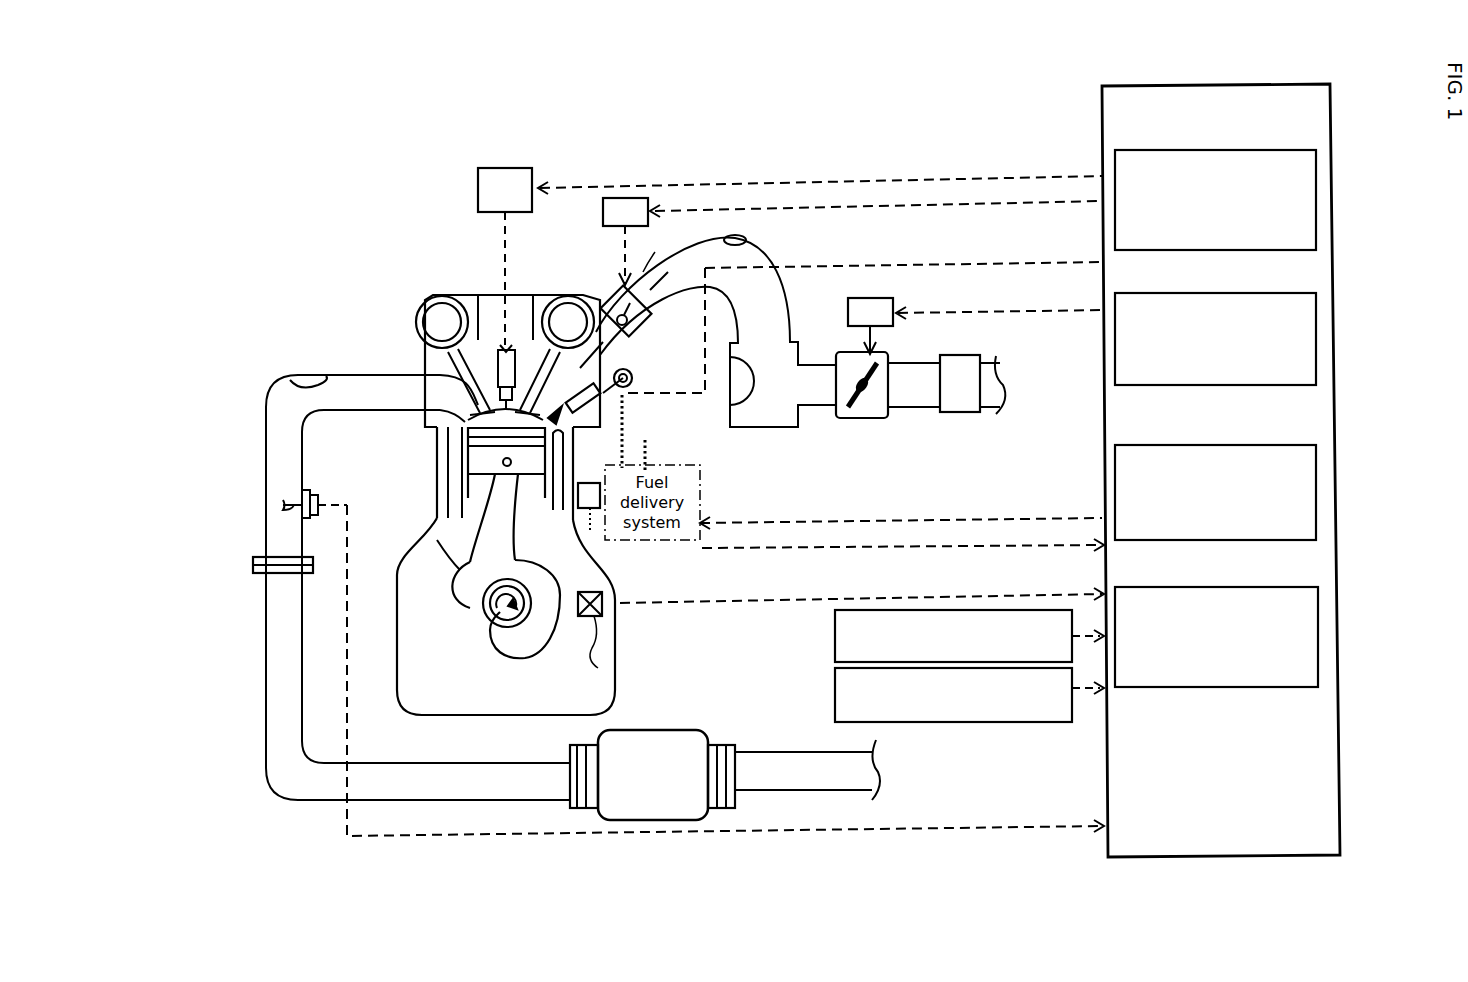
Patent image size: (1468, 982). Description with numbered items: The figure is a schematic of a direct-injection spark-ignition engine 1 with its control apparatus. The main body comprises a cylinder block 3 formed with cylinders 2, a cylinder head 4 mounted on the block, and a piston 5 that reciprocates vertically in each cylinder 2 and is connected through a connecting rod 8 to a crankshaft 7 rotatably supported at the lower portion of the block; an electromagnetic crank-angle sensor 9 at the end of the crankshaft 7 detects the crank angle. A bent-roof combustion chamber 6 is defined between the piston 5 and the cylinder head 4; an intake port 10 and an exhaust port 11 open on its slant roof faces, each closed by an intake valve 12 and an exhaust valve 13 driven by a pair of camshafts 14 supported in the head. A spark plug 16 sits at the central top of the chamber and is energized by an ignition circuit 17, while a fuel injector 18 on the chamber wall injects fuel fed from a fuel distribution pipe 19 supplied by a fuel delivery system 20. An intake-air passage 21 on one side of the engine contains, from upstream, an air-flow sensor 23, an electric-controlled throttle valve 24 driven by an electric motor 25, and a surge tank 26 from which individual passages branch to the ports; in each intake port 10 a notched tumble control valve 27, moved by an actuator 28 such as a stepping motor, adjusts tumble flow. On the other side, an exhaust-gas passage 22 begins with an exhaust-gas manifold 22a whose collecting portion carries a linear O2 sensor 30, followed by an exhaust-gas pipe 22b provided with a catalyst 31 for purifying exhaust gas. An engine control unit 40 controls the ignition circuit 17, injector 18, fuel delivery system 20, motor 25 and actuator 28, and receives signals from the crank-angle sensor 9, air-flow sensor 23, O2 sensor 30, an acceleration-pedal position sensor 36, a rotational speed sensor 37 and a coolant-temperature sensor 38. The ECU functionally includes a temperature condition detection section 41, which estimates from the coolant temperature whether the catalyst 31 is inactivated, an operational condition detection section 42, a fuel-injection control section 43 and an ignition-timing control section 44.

The engine 1 is at (392, 600).
The cylinder 2 is at (506, 525).
The cylinder block 3 is at (437, 522).
The cylinder head 4 is at (468, 432).
The piston 5 is at (462, 490).
The combustion chamber 6 is at (468, 462).
The crankshaft 7 is at (470, 610).
The connecting rod 8 is at (437, 556).
The crank-angle sensor 9 is at (595, 655).
The intake port 10 is at (637, 353).
The exhaust port 11 is at (430, 396).
The intake valve 12 is at (624, 299).
The exhaust valve 13 is at (425, 368).
The camshaft 14 is at (416, 322).
The spark plug 16 is at (480, 295).
The ignition circuit 17 is at (478, 188).
The fuel injector 18 is at (596, 408).
The fuel distribution pipe 19 is at (633, 380).
The fuel delivery system 20 is at (646, 432).
The intake-air passage 21 is at (746, 242).
The exhaust-gas passage 22 is at (300, 381).
The exhaust-gas manifold 22a is at (265, 445).
The exhaust-gas pipe 22b is at (372, 763).
The air-flow sensor 23 is at (965, 355).
The throttle valve 24 is at (862, 418).
The electric motor 25 is at (890, 298).
The surge tank 26 is at (728, 418).
The tumble control valve 27 is at (670, 245).
The actuator 28 is at (603, 212).
The linear O2 sensor 30 is at (308, 490).
The catalyst 31 is at (665, 730).
The acceleration-pedal position sensor 36 is at (975, 610).
The rotational speed sensor 37 is at (985, 722).
The coolant-temperature sensor 38 is at (604, 594).
The engine control unit 40 is at (1340, 118).
The temperature condition detection section 41 is at (1316, 184).
The operational condition detection section 42 is at (1316, 326).
The fuel-injection control section 43 is at (1316, 470).
The ignition-timing control section 44 is at (1318, 615).